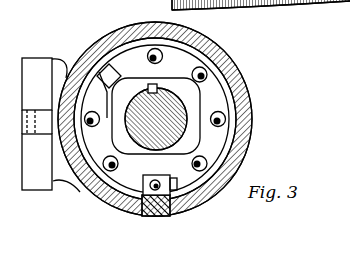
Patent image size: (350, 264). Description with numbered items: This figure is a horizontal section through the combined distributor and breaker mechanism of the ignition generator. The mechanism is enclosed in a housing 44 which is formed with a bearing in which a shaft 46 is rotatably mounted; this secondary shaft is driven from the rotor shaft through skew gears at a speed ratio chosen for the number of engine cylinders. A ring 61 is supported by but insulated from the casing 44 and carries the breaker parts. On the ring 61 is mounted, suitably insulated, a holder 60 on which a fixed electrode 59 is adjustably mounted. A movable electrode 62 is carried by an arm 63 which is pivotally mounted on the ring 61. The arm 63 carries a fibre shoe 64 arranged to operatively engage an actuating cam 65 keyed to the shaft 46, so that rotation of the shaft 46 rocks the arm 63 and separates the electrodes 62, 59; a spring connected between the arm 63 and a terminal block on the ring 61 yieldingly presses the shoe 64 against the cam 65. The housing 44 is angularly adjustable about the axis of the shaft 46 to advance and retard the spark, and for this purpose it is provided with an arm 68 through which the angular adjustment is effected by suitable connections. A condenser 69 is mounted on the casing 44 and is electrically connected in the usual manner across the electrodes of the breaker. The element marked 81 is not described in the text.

The housing 44 is at (241, 81).
The shaft 46 is at (204, 80).
The fixed electrode 59 is at (151, 48).
The holder 60 is at (176, 27).
The ring 61 is at (224, 124).
The movable electrode 62 is at (138, 47).
The arm 63 is at (108, 64).
The fibre shoe 64 is at (99, 71).
The actuating cam 65 is at (209, 138).
The arm 68 is at (37, 162).
The condenser 69 is at (36, 58).
The key block 81 is at (141, 208).